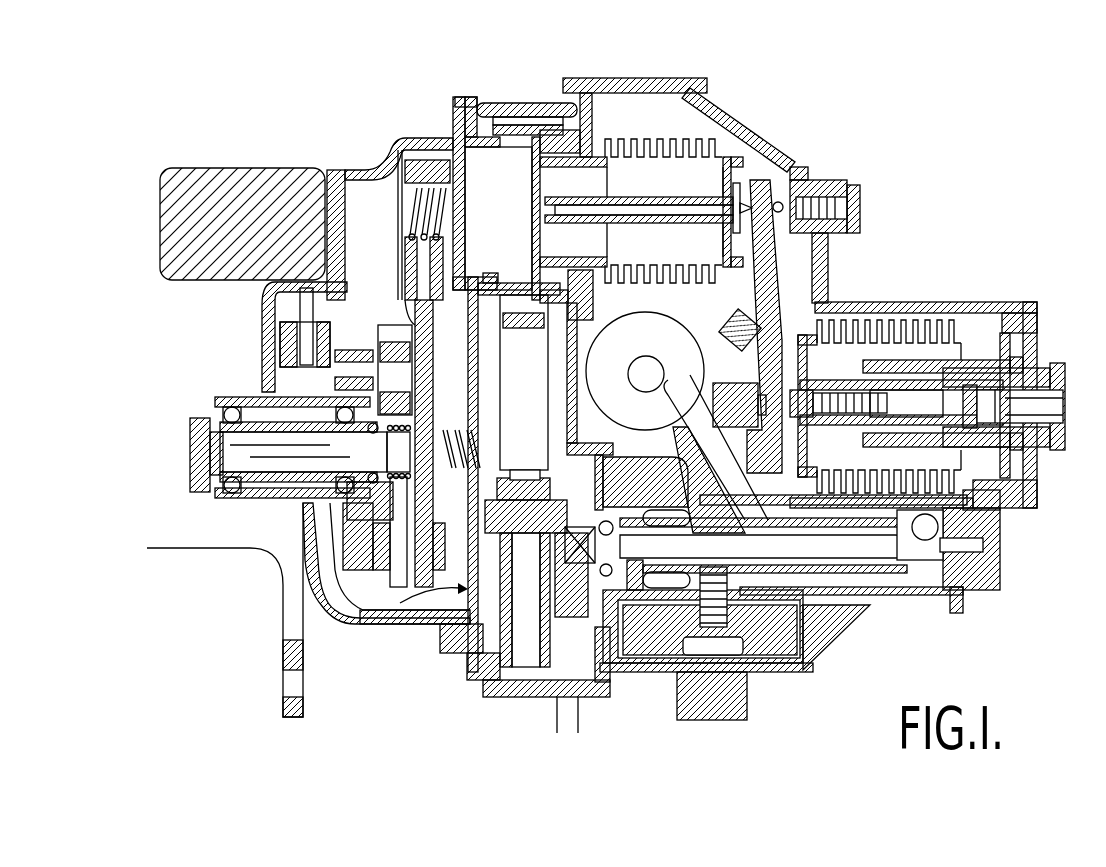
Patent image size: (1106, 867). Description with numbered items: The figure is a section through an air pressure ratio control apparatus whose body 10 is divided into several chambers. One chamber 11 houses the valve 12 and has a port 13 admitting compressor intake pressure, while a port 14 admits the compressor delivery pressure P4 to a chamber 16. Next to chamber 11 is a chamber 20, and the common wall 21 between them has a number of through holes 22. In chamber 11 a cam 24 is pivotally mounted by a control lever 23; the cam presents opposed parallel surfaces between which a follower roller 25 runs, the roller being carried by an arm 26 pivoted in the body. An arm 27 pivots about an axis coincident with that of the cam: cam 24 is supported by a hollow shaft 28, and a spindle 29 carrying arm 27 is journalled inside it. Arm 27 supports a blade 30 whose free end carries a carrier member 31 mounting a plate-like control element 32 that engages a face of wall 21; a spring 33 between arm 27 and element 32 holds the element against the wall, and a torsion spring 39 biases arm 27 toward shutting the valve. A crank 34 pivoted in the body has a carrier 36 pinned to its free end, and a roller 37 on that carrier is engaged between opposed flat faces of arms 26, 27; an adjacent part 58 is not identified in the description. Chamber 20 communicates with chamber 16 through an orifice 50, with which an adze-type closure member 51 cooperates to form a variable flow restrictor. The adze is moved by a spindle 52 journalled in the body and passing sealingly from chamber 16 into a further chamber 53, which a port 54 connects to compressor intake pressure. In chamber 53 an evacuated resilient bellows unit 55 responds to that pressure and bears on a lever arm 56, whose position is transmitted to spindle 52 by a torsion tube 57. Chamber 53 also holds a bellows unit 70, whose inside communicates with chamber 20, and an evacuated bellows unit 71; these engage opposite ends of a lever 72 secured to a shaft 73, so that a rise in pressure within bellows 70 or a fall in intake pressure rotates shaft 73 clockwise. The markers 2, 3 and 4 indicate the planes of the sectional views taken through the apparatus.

The section line 2- 2 is at (456, 93).
The section line 3- 3 is at (272, 157).
The section line 4- 4 is at (523, 100).
The body 10 is at (727, 108).
The chamber 11 is at (317, 278).
The valve 12 is at (390, 205).
The port 13 is at (403, 620).
The port 14 is at (573, 702).
The chamber 16 is at (573, 640).
The chamber 20 is at (520, 143).
The common wall 21 is at (455, 133).
The through holes 22 is at (472, 226).
The control lever 23 is at (277, 548).
The cam 24 is at (405, 408).
The follower roller 25 is at (390, 357).
The arm 26 is at (337, 383).
The arm 27 is at (425, 522).
The hollow shaft 28 is at (283, 475).
The spindle 29 is at (253, 548).
The blade 30 is at (433, 372).
The carrier member 31 is at (414, 170).
The control element 32 is at (465, 181).
The spring 33 is at (423, 237).
The crank 34 is at (290, 343).
The carrier 36 is at (300, 308).
The roller 37 is at (367, 570).
The torsion spring 39 is at (404, 452).
The orifice 50 is at (523, 290).
The adze-type closure member 51 is at (523, 307).
The spindle 52 is at (850, 545).
The chamber 53 is at (788, 258).
The port 54 is at (772, 148).
The evacuated resilient bellows unit 55 is at (632, 332).
The lever arm 56 is at (713, 503).
The torsion tube 57 is at (833, 573).
The block 58 is at (393, 578).
The bellows unit 70 is at (670, 177).
The bellows unit 71 is at (927, 350).
The lever 72 is at (783, 288).
The shaft 73 is at (736, 310).
The compressor delivery pressure P4 is at (568, 720).